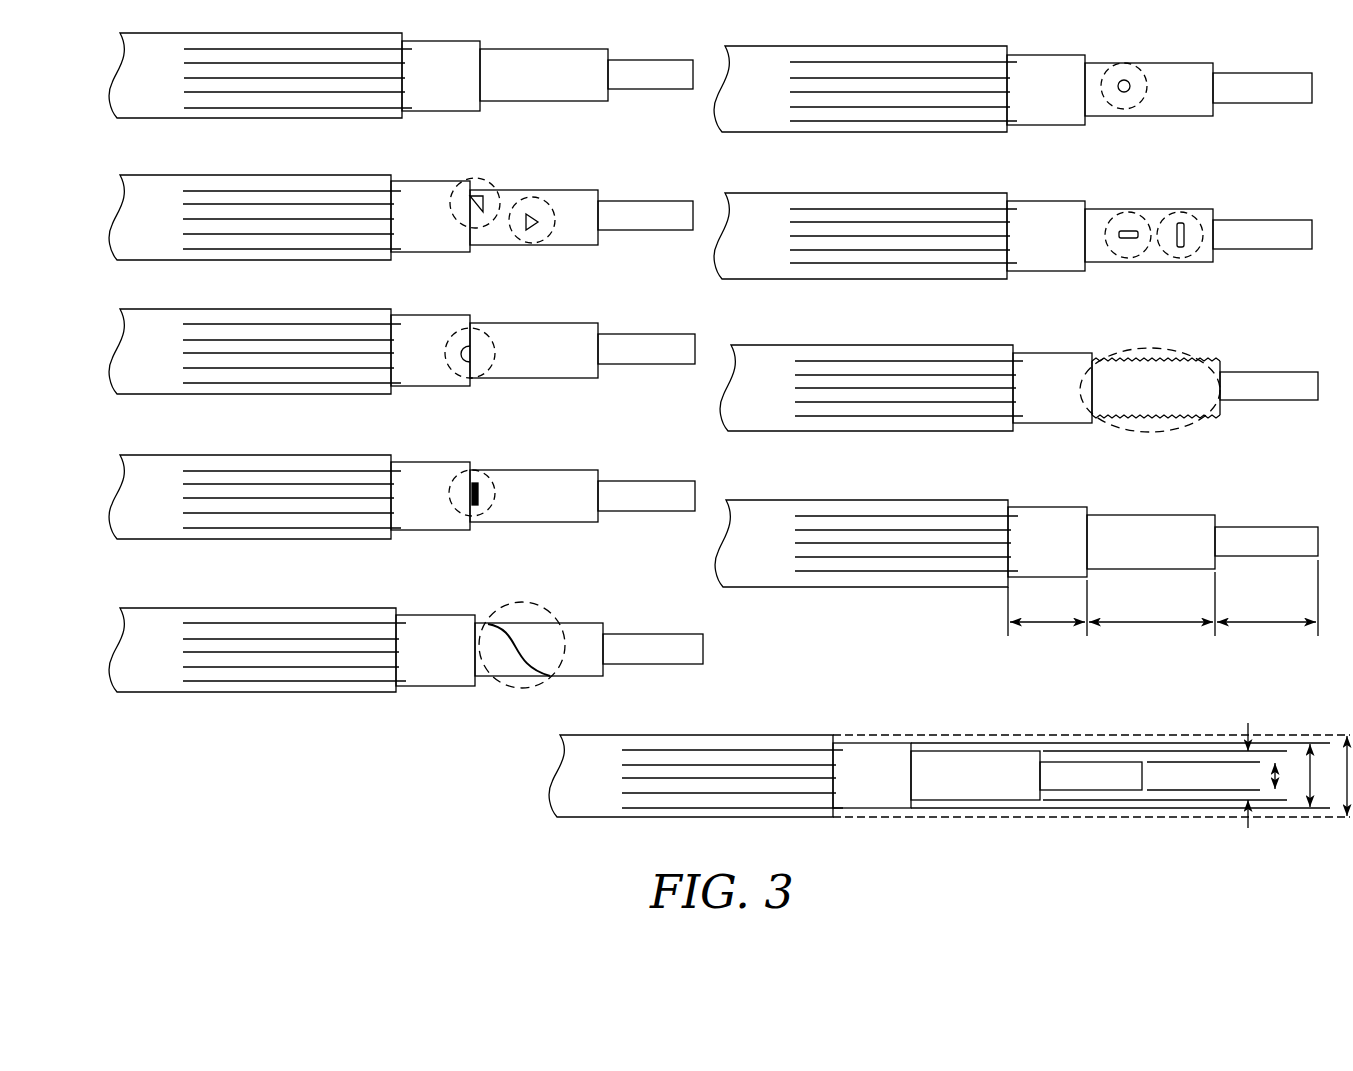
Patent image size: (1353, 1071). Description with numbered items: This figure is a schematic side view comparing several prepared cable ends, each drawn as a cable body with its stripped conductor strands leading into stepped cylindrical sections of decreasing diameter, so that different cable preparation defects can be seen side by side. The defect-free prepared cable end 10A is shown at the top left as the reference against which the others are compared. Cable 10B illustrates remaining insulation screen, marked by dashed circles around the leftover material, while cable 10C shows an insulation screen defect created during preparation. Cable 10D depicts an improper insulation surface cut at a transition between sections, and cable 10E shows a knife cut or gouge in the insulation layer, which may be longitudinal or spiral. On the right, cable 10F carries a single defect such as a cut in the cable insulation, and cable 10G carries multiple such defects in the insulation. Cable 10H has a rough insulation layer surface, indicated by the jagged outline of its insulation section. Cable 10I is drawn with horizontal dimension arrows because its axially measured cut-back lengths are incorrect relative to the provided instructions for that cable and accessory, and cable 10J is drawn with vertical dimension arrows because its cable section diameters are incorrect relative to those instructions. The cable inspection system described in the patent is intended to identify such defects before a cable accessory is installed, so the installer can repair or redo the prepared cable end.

The defect-free prepared cable end 10A is at (555, 121).
The cable with remaining insulation screen 10B is at (555, 258).
The cable with insulation screen defect 10C is at (555, 389).
The cable with improper insulation surface cut at a transition 10D is at (555, 533).
The cable with knife cut or gouge in insulation layer 10E is at (498, 701).
The cable with insulation defect 10F is at (1199, 141).
The cable with multiple insulation defects 10G is at (1199, 291).
The cable with rough insulation layer surface 10H is at (1199, 444).
The cable with incorrect axial cut-back lengths 10I is at (965, 608).
The cable with incorrect section diameters 10J is at (923, 839).